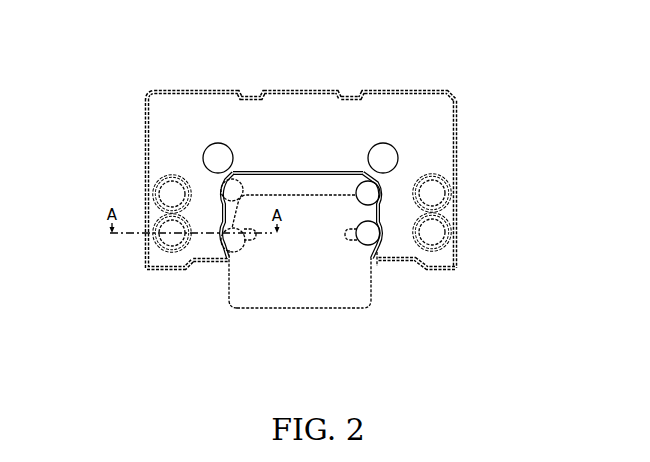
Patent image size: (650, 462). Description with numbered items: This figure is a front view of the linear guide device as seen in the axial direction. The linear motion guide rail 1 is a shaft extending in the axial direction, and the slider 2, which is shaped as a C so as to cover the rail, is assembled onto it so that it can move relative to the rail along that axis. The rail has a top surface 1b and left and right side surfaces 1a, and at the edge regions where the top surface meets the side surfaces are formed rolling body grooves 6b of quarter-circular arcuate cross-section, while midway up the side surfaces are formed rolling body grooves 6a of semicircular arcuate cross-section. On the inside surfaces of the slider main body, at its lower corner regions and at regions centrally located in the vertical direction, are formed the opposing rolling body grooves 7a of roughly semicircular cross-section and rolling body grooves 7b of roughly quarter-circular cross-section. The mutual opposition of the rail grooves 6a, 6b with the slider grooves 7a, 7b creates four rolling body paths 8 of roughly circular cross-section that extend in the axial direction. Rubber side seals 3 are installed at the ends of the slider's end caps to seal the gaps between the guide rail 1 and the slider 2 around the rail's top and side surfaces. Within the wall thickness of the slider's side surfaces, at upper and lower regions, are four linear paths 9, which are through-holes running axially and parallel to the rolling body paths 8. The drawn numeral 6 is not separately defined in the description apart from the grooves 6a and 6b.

The linear motion guide rail 1 is at (304, 263).
The side surface 1a is at (229, 303).
The top surface 1b is at (327, 190).
The slider 2 is at (297, 88).
The side seal 3 is at (382, 240).
The engagement portion of cover 6 is at (455, 261).
The rolling body groove 6a is at (231, 262).
The rolling body groove 6b is at (224, 185).
The rolling body groove 7a is at (223, 252).
The rolling body groove 7b is at (221, 172).
The rolling body path 8 is at (237, 58).
The linear path 9 is at (163, 192).